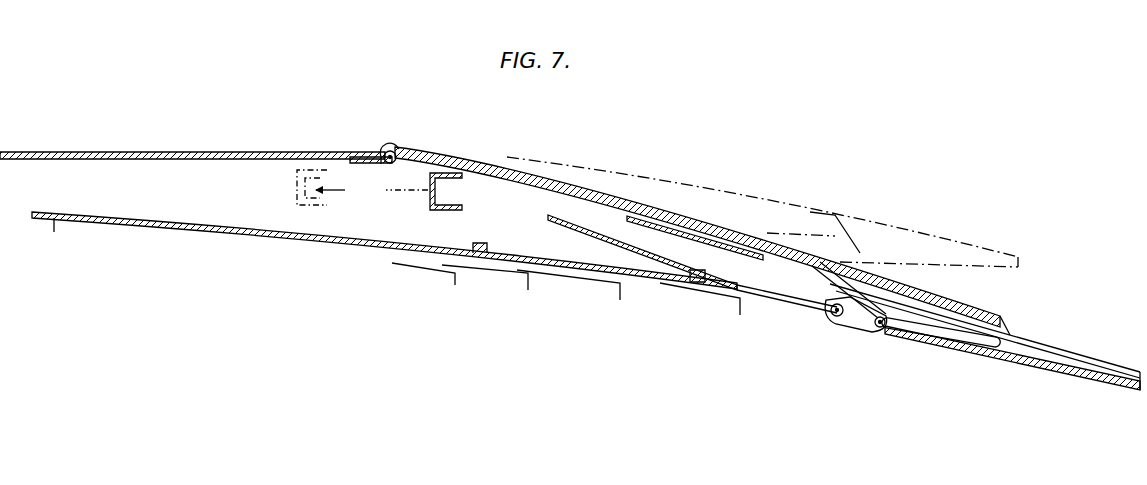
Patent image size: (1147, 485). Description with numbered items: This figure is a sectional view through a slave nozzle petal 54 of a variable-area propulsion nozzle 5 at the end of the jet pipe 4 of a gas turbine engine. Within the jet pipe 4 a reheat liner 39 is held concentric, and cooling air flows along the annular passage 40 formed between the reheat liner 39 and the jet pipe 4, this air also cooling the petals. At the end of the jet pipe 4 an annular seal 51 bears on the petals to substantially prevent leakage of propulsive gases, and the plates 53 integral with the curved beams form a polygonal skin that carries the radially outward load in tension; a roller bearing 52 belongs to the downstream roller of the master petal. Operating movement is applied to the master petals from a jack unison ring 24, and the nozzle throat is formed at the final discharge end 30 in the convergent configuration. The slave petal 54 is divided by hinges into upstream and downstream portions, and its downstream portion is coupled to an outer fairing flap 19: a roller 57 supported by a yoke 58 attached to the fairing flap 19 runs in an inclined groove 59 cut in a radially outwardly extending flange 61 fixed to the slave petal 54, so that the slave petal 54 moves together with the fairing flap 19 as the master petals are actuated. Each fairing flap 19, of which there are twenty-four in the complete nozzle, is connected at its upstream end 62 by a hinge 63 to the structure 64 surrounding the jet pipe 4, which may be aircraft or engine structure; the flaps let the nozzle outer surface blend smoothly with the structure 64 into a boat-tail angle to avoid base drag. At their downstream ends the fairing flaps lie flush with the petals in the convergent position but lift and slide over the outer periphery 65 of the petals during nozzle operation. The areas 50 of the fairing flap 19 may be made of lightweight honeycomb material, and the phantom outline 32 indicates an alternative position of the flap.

The jet pipe 4 is at (313, 232).
The propulsion nozzle 5 is at (740, 219).
The fairing flap 19 is at (948, 308).
The jack unison ring 24 is at (318, 160).
The final discharge end 30 is at (1135, 393).
The retracted flap position 32 is at (1065, 222).
The reheat liner 39 is at (502, 273).
The annular passage 40 is at (590, 277).
The areas of the flaps 50 is at (597, 188).
The annular seal 51 is at (742, 291).
The roller bearing 52 is at (698, 296).
The plates 53 is at (662, 222).
The slave petal 54 is at (993, 357).
The roller 57 is at (878, 330).
The yoke 58 is at (828, 302).
The inclined groove 59 is at (945, 338).
The flange 61 is at (1030, 335).
The upstream end 62 is at (423, 149).
The hinge 63 is at (390, 164).
The structure 64 is at (201, 152).
The outer periphery 65 is at (1093, 352).